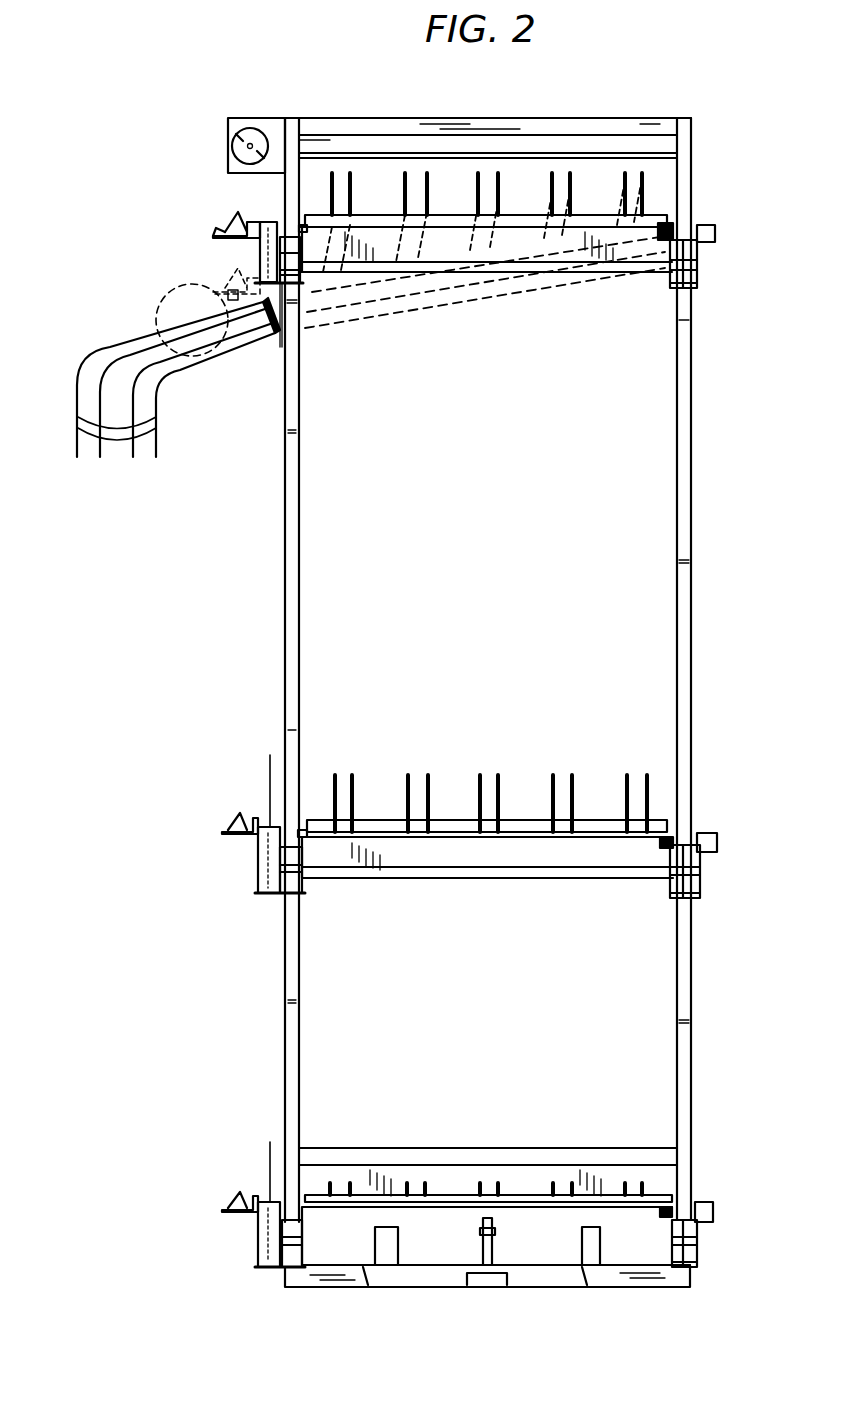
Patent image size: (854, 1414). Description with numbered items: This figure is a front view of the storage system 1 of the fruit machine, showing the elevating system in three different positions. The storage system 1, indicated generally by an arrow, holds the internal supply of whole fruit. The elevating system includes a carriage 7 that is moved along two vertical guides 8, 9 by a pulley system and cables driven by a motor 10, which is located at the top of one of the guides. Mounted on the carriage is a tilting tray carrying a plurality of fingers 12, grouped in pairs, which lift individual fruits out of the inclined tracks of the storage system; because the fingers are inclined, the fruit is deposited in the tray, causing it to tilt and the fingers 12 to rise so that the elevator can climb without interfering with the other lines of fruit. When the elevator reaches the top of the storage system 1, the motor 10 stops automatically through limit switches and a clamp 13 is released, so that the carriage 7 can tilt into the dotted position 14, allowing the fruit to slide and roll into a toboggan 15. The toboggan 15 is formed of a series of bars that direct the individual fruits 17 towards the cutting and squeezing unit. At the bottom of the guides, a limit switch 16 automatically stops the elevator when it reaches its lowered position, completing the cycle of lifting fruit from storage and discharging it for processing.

The storage system 1 is at (500, 670).
The carriage 7 is at (485, 828).
The vertical guide 8 is at (288, 635).
The vertical guide 9 is at (688, 622).
The motor 10 is at (240, 128).
The fingers 12 is at (408, 772).
The clamp 13 is at (226, 232).
The dotted position 14 is at (370, 316).
The toboggan 15 is at (114, 345).
The limit switch 16 is at (490, 1237).
The individual fruits 17 is at (188, 287).